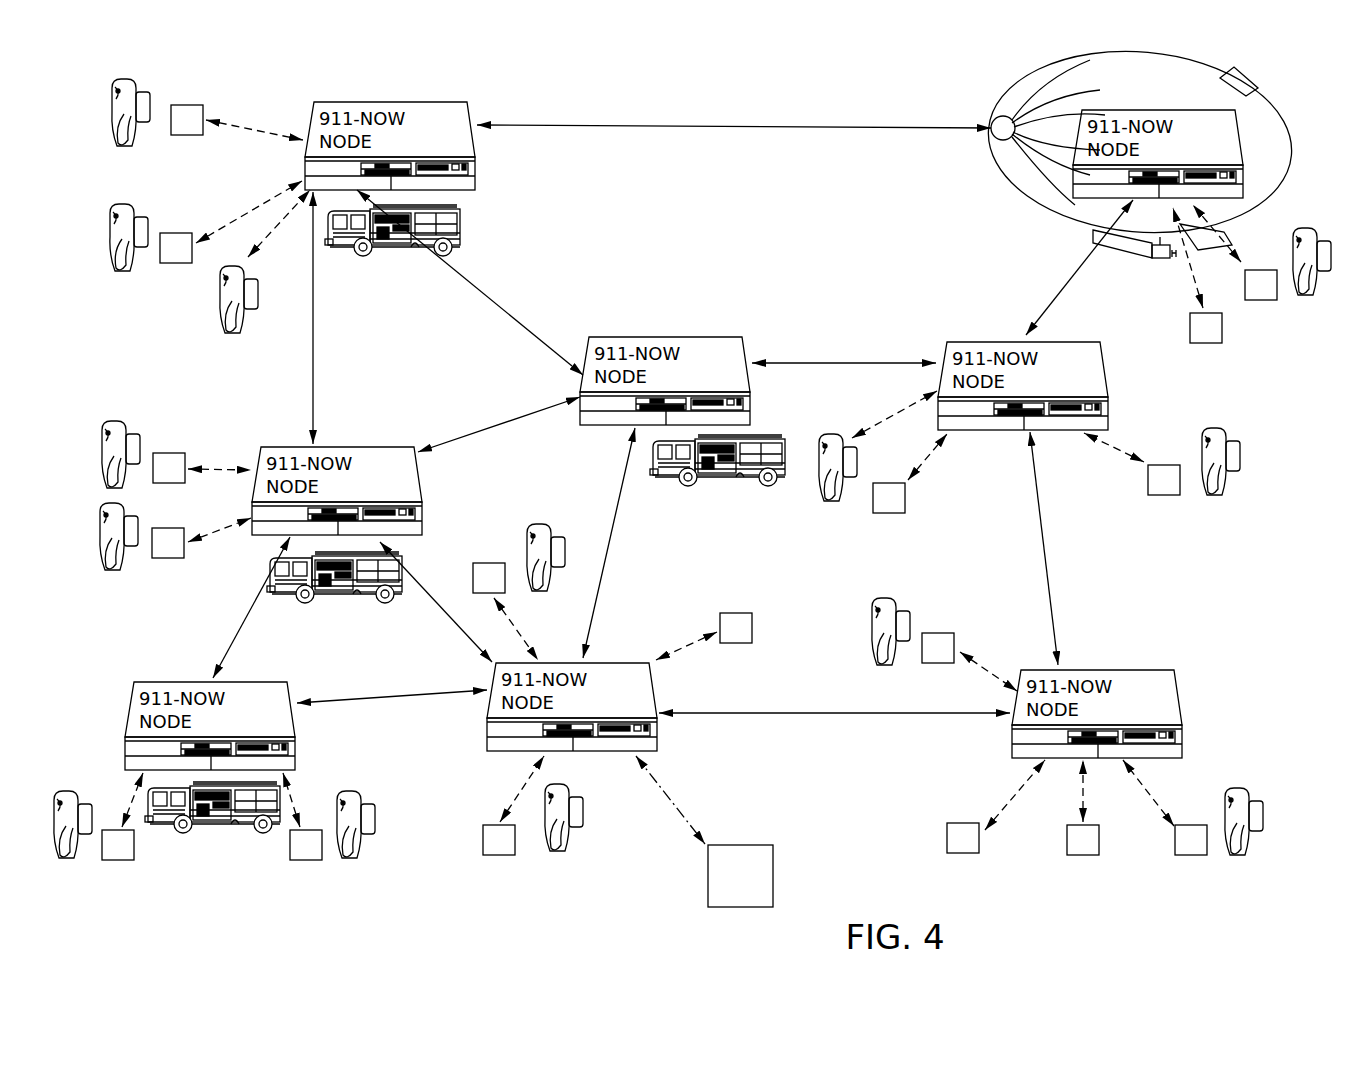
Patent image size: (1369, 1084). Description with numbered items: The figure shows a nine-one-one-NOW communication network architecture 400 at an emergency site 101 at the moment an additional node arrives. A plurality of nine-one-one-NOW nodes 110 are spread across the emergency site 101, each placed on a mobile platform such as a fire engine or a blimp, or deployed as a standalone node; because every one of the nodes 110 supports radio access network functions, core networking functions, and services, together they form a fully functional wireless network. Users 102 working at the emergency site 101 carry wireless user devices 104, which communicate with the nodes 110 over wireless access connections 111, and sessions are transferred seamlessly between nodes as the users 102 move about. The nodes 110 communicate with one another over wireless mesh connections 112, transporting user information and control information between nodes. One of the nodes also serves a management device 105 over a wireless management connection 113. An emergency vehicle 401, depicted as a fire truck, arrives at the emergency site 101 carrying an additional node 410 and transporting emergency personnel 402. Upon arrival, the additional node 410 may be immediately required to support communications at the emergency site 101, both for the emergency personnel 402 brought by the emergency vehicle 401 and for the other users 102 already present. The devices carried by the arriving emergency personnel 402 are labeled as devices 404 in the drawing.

The emergency site 101 is at (727, 527).
The users 102 is at (128, 154).
The wireless user devices 104 is at (190, 104).
The management device 105 is at (722, 893).
The 911-NOW nodes 110 is at (458, 141).
The wireless access connections 111 is at (262, 112).
The wireless mesh connections 112 is at (528, 330).
The wireless management connection 113 is at (668, 797).
The 911-NOW communication network architecture 400 is at (877, 897).
The emergency vehicle 401 is at (200, 832).
The emergency personnel 402 is at (75, 865).
The wireless user device 404 is at (120, 864).
The additional 911-NOW node 410 is at (280, 715).